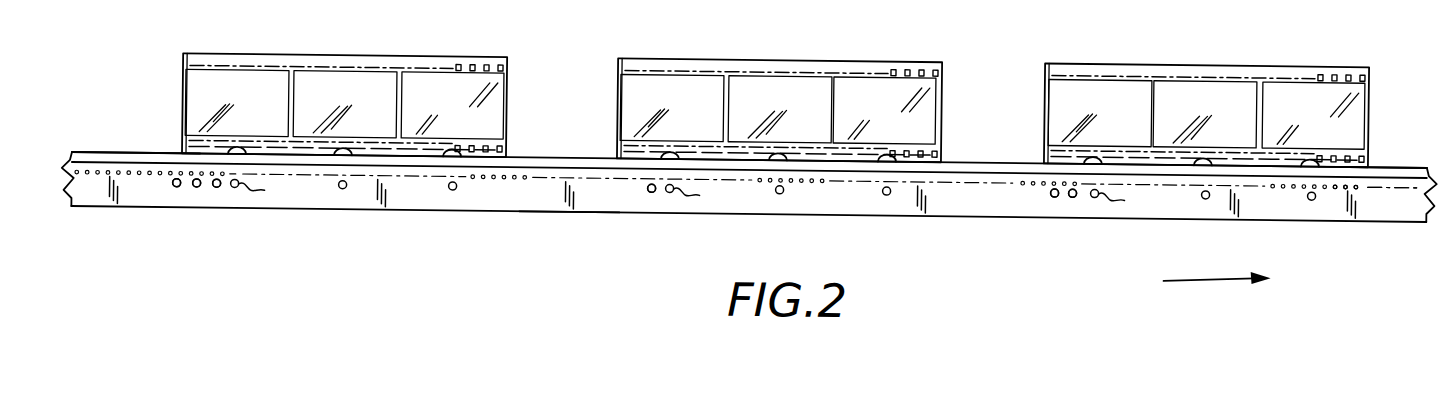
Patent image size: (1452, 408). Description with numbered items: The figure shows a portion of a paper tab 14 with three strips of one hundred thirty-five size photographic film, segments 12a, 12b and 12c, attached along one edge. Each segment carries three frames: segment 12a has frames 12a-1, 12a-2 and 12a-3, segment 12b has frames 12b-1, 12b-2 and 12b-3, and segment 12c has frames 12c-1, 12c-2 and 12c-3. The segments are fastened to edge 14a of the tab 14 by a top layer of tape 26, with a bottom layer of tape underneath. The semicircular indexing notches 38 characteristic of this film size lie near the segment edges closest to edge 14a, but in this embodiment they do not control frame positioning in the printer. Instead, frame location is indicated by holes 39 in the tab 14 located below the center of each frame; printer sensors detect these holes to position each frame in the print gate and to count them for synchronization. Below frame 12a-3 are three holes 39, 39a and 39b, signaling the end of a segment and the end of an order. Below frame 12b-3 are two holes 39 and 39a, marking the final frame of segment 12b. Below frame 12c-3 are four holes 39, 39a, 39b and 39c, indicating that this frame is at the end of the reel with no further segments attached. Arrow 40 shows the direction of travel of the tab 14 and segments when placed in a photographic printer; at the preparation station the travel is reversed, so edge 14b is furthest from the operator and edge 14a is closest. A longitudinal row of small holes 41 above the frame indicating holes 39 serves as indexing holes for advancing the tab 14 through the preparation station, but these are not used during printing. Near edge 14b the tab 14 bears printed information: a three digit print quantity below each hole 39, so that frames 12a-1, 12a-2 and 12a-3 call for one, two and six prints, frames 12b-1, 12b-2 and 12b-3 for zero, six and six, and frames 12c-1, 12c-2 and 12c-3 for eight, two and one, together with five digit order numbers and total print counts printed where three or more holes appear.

The film segment 12a is at (1207, 93).
The film segment 12b is at (780, 91).
The film segment 12c is at (345, 81).
The frame 12a-1 is at (1330, 99).
The frame 12a-2 is at (1232, 99).
The frame 12a-3 is at (1128, 99).
The frame 12b-1 is at (900, 99).
The frame 12b-2 is at (806, 99).
The frame 12b-3 is at (702, 99).
The frame 12c-1 is at (470, 99).
The frame 12c-2 is at (372, 99).
The frame 12c-3 is at (262, 99).
The paper tab 14 is at (613, 186).
The edge of tab 14a is at (1390, 152).
The edge of tab 14b is at (571, 206).
The top layer of tape 26 is at (100, 151).
The indexing notches 38 is at (345, 147).
The frame indicating hole 39 is at (339, 184).
The additional hole 39a is at (216, 186).
The additional hole 39b is at (196, 186).
The additional hole 39c is at (173, 184).
The arrow 40 is at (1213, 269).
The small holes 41 is at (1362, 172).